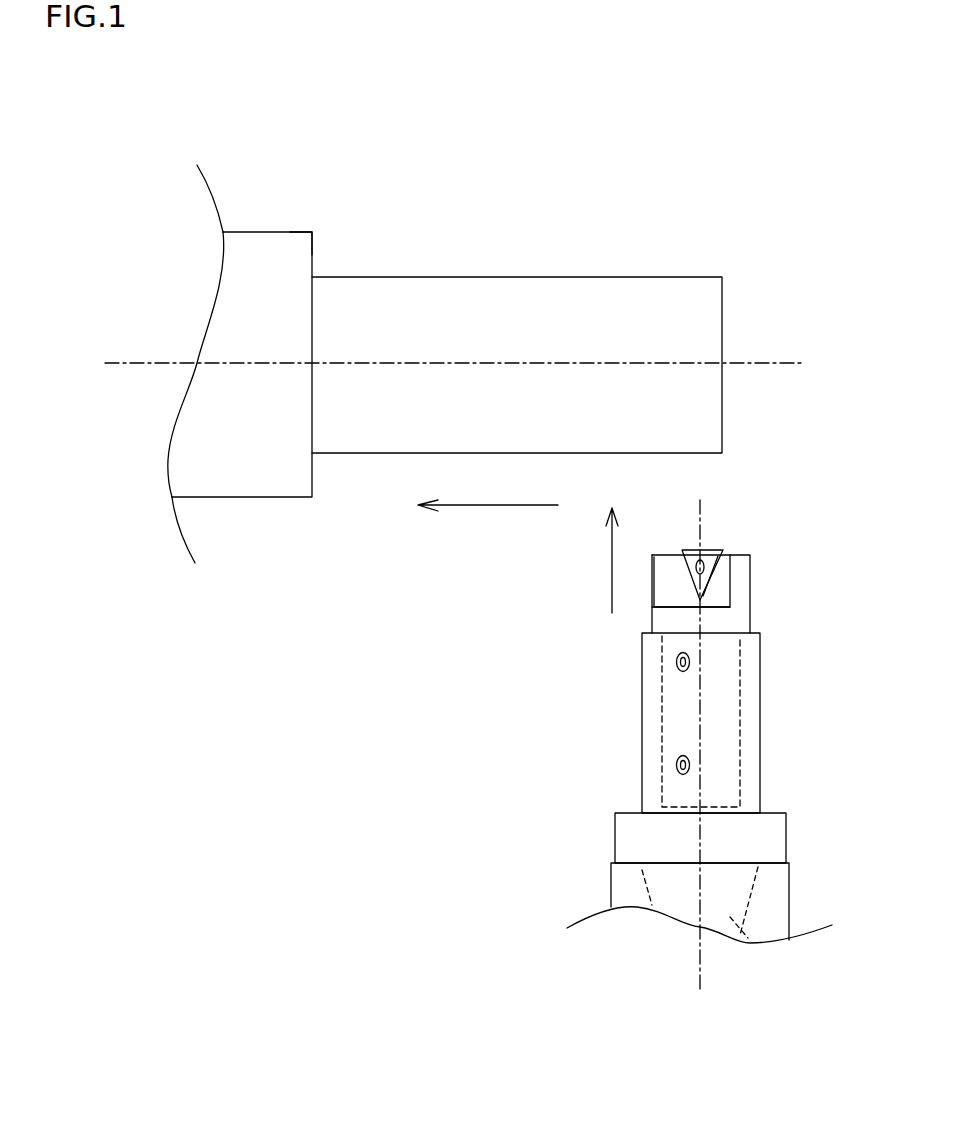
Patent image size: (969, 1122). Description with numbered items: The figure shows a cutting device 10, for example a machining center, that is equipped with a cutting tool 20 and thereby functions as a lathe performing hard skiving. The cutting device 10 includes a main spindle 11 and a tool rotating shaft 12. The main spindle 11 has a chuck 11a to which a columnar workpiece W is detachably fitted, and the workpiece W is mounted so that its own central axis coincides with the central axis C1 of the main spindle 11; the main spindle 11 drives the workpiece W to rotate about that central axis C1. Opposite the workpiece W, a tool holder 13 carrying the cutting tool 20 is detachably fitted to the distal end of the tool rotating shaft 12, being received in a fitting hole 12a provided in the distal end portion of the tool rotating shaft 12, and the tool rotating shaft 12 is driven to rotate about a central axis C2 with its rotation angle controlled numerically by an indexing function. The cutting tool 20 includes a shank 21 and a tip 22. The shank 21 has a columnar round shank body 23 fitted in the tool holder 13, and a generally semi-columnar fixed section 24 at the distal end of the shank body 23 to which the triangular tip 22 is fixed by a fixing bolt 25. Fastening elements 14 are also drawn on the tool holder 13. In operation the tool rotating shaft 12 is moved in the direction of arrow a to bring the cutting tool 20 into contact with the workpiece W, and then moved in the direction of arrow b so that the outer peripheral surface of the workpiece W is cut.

The cutting device 10 is at (540, 148).
The main spindle 11 is at (260, 195).
The chuck 11a is at (298, 228).
The workpiece W is at (632, 275).
The central axis C1 is at (762, 362).
The arrow a is at (610, 598).
The arrow b is at (489, 508).
The central axis C2 is at (700, 955).
The cutting tool 20 is at (767, 571).
The shank 21 is at (752, 595).
The tip 22 is at (688, 568).
The fixed section 24 is at (753, 565).
The fixing bolt 25 is at (708, 583).
The tool holder 13 is at (642, 718).
The shank body 23 is at (742, 716).
The fastening bolts 14 is at (676, 663).
The tool rotating shaft 12 is at (611, 878).
The fitting hole 12a is at (748, 938).